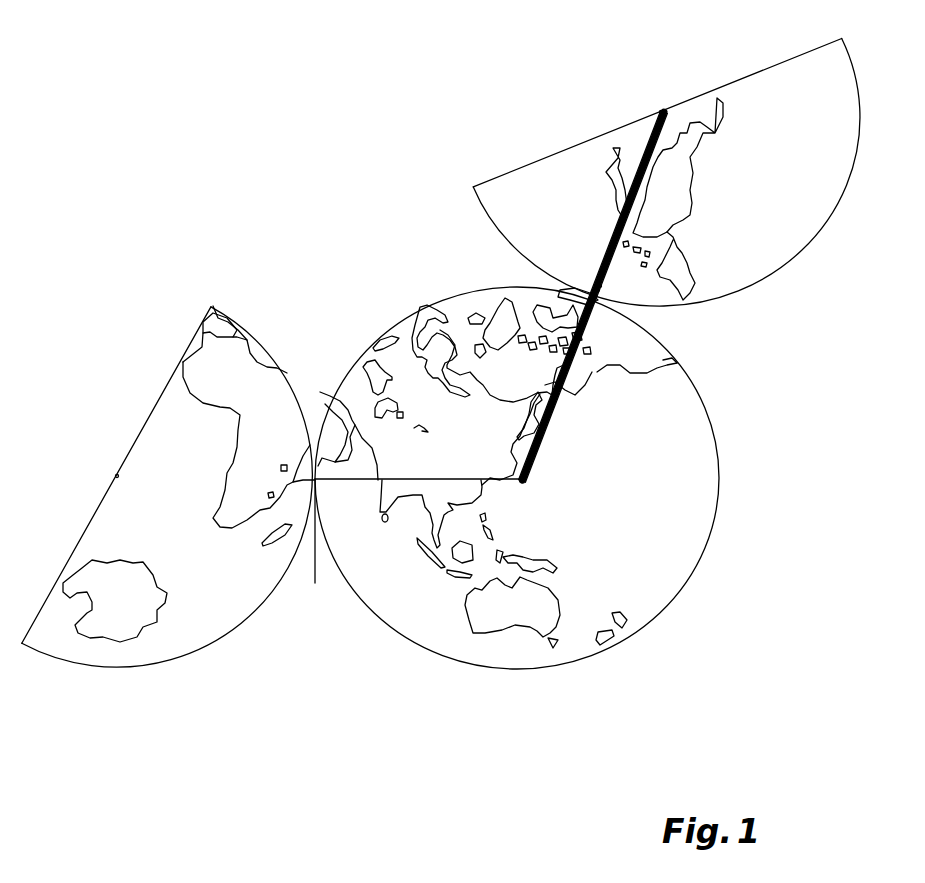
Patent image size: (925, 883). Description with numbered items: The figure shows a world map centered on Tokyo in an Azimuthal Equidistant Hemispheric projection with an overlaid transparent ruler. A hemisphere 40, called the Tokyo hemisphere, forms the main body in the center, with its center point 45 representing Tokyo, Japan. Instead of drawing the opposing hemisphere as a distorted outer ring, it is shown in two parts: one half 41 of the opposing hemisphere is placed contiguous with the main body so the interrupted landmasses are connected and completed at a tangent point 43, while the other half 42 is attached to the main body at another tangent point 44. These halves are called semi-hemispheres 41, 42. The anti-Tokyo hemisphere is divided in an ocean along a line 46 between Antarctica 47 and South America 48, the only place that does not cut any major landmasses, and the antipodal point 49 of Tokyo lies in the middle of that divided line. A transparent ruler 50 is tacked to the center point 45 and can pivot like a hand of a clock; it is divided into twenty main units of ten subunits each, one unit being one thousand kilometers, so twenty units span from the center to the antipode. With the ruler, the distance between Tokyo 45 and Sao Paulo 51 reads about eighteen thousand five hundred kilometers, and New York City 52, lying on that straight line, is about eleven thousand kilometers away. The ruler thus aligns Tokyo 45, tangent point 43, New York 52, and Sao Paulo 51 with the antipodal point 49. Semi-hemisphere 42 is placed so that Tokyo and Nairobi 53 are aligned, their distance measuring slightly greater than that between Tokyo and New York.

The hemisphere 40 is at (638, 530).
The semi-hemisphere 41 is at (643, 173).
The semi-hemisphere 42 is at (168, 519).
The tangent point 43 is at (598, 290).
The tangent point 44 is at (311, 544).
The center point 45 is at (521, 483).
The line 46 is at (752, 72).
The Antarctica 47 is at (110, 622).
The South America 48 is at (667, 190).
The antipodal point 49 is at (660, 112).
The transparent ruler 50 is at (553, 442).
The Sao Paulo 51 is at (645, 140).
The New York City 52 is at (600, 284).
The Nairobi 53 is at (290, 464).